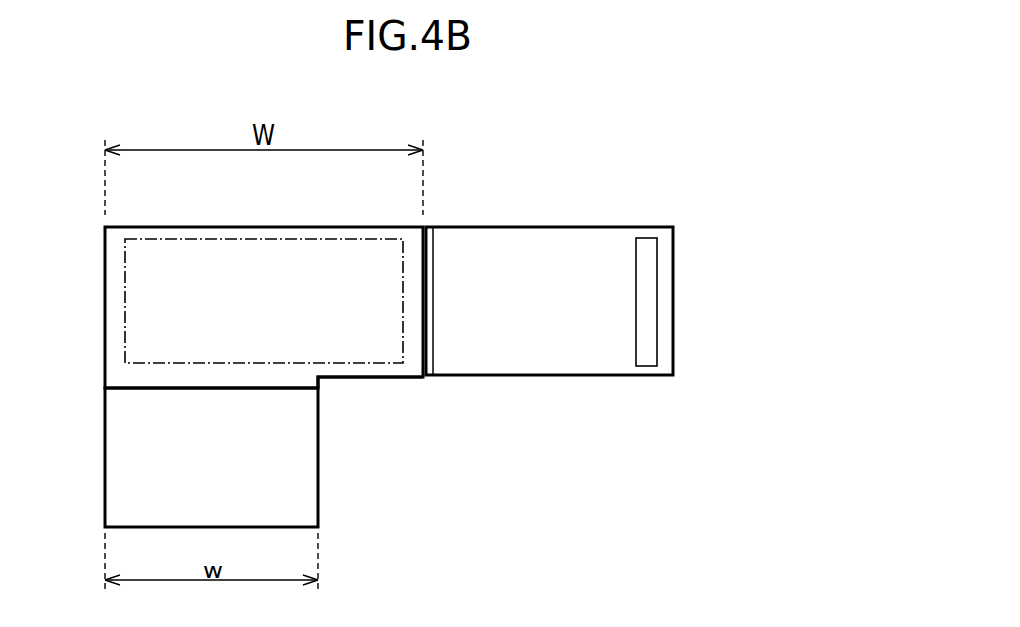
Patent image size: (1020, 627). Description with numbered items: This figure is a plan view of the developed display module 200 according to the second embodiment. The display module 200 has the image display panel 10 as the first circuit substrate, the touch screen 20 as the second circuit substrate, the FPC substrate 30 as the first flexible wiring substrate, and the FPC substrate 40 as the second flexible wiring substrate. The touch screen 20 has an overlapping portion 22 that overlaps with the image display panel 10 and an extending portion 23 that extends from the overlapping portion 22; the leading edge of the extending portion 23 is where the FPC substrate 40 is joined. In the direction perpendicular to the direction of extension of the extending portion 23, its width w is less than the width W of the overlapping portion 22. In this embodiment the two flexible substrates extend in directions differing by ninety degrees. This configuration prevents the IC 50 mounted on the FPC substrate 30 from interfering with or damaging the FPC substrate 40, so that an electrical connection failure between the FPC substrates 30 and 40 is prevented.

The display module 200 is at (641, 147).
The image display panel 10 is at (429, 373).
The touch screen 20 is at (234, 237).
The overlapping portion 22 is at (110, 310).
The extending portion 23 is at (304, 383).
The FPC substrate 30 is at (502, 233).
The FPC substrate 40 is at (110, 468).
The IC 50 is at (645, 366).